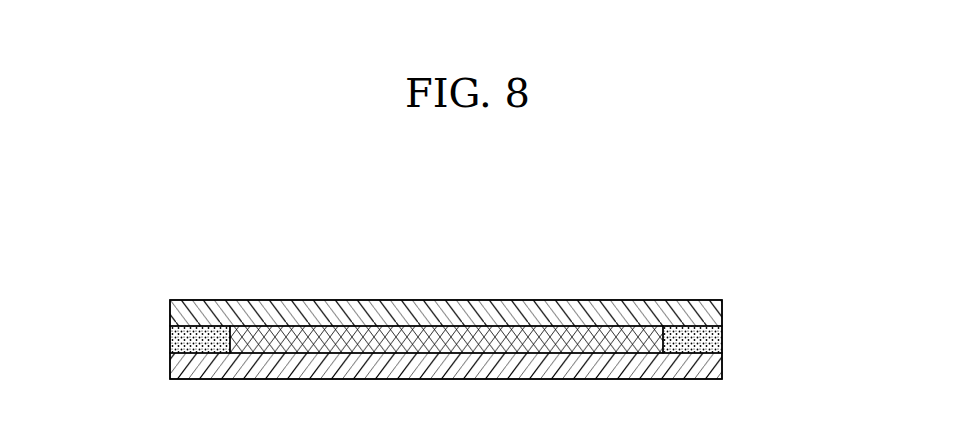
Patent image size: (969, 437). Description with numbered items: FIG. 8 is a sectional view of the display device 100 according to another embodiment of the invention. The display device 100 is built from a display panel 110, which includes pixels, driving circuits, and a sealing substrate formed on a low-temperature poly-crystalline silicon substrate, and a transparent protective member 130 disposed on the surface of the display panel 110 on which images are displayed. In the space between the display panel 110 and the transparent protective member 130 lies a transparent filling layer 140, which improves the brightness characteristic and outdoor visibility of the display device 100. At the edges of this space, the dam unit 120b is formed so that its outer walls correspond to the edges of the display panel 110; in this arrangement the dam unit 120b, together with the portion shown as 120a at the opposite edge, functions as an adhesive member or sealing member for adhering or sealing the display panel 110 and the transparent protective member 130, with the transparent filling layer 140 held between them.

The display device 100 is at (660, 222).
The display panel 110 is at (708, 368).
The first sealing member 120a is at (710, 342).
The dam unit 120b is at (170, 343).
The transparent protective member 130 is at (710, 311).
The transparent filling layer 140 is at (553, 340).